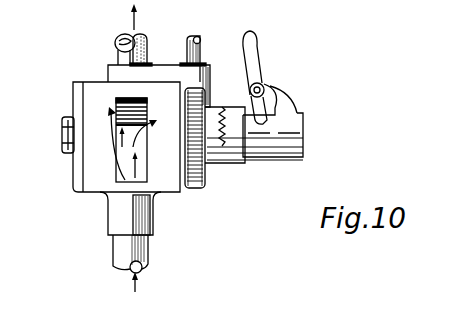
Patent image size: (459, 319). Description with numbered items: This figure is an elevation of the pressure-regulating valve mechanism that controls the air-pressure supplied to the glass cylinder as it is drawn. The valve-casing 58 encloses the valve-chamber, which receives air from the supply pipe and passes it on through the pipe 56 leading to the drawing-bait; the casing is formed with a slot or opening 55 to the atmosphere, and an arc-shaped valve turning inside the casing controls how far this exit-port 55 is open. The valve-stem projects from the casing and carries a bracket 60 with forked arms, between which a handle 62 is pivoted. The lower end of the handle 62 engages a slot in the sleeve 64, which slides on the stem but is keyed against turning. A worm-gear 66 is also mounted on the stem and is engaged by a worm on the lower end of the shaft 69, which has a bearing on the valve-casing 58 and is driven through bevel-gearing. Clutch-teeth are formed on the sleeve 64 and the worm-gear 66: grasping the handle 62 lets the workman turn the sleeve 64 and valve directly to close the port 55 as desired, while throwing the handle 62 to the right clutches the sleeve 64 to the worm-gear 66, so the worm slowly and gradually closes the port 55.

The slot or opening 55 is at (126, 152).
The pipe 56 is at (120, 53).
The valve-casing 58 is at (117, 200).
The bracket 60 is at (281, 103).
The handle 62 is at (246, 45).
The sleeve 64 is at (262, 158).
The worm-gear 66 is at (210, 181).
The shaft 69 is at (190, 48).